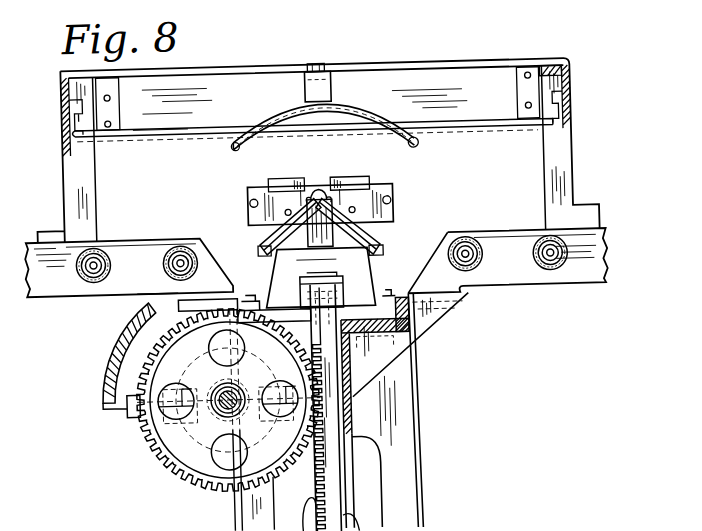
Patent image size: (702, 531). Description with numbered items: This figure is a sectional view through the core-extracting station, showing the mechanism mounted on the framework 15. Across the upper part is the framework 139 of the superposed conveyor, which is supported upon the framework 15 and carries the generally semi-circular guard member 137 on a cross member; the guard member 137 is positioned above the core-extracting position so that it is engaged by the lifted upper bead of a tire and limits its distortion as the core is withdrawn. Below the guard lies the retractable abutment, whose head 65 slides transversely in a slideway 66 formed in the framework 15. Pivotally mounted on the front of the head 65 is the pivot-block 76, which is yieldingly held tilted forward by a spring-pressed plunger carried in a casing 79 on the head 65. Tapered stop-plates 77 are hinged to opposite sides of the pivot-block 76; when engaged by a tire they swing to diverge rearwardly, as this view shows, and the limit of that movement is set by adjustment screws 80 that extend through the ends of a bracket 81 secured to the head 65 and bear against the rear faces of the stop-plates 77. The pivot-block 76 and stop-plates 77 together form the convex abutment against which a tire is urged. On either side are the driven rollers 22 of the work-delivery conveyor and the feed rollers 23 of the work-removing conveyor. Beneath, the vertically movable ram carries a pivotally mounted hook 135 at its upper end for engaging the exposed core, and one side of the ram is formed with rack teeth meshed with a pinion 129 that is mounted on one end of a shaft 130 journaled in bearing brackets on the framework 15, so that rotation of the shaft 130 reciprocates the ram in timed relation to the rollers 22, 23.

The framework 139 is at (479, 68).
The guard member 137 is at (256, 157).
The casing 79 is at (324, 188).
The bracket 81 is at (378, 187).
The pivot-block 76 is at (317, 192).
The adjustment screws 80 is at (253, 201).
The stop-plates 77 is at (271, 243).
The head 65 is at (375, 274).
The hook 135 is at (303, 280).
The feed rollers 23 is at (171, 245).
The driven rollers 22 is at (551, 278).
The slideway 66 is at (402, 317).
The framework 15 is at (418, 430).
The pinion 129 is at (179, 469).
The shaft 130 is at (213, 414).